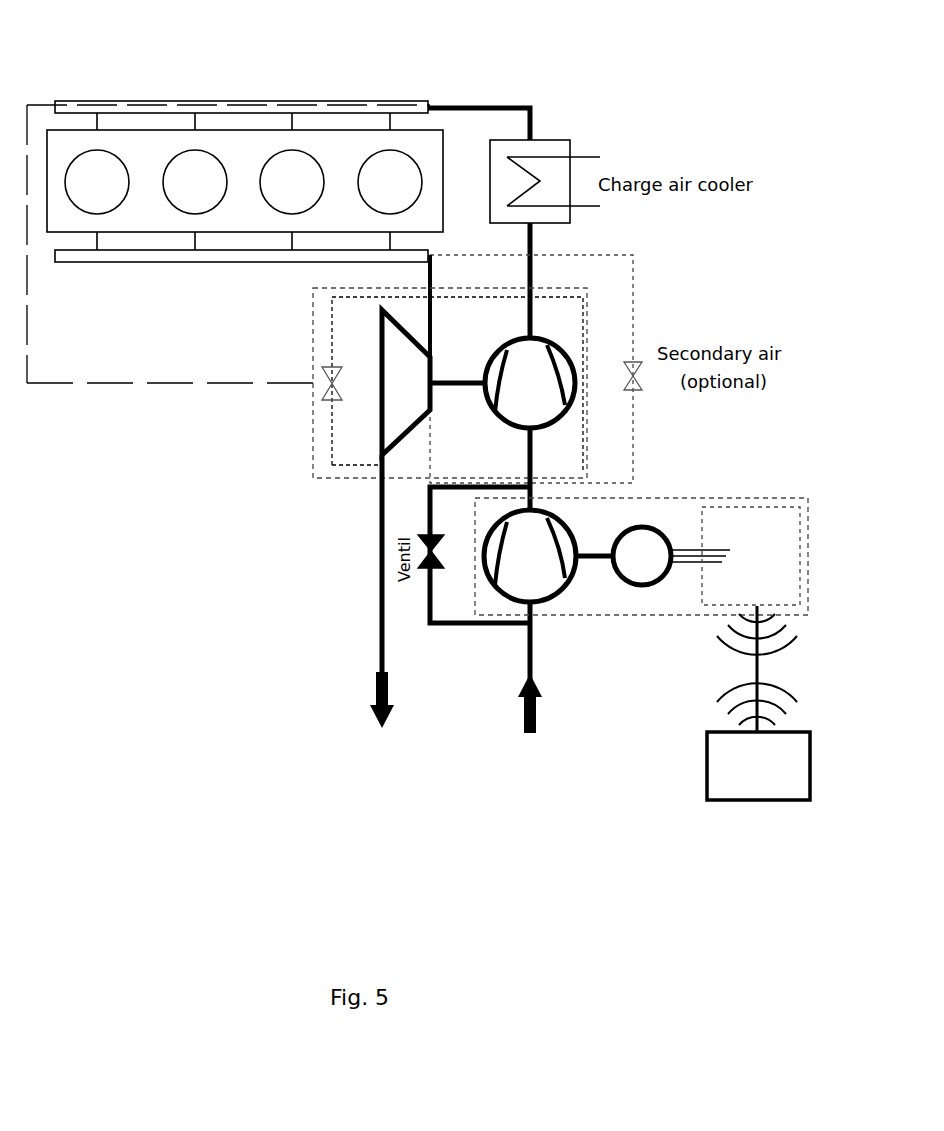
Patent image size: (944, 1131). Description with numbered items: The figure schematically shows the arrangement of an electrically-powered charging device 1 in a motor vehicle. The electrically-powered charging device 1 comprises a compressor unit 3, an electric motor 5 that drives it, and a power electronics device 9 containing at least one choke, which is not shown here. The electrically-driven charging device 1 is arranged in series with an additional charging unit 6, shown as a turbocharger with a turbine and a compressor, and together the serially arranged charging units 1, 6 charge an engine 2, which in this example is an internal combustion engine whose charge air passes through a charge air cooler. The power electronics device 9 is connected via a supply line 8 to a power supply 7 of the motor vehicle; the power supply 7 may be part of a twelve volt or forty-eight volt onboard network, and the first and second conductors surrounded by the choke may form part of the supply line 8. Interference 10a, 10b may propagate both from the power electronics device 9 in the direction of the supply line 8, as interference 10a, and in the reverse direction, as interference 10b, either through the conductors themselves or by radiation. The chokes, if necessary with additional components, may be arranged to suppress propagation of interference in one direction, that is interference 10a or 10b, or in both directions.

The electrically-powered charging device 1 is at (588, 513).
The engine 2 is at (143, 160).
The compressor unit 3 is at (517, 600).
The electric motor 5 is at (670, 537).
The additional charging unit 6 is at (408, 443).
The power supply 7 is at (720, 762).
The supply line 8 is at (768, 667).
The power electronics device 9 is at (703, 593).
The interference 10a is at (797, 630).
The interference 10b is at (714, 712).